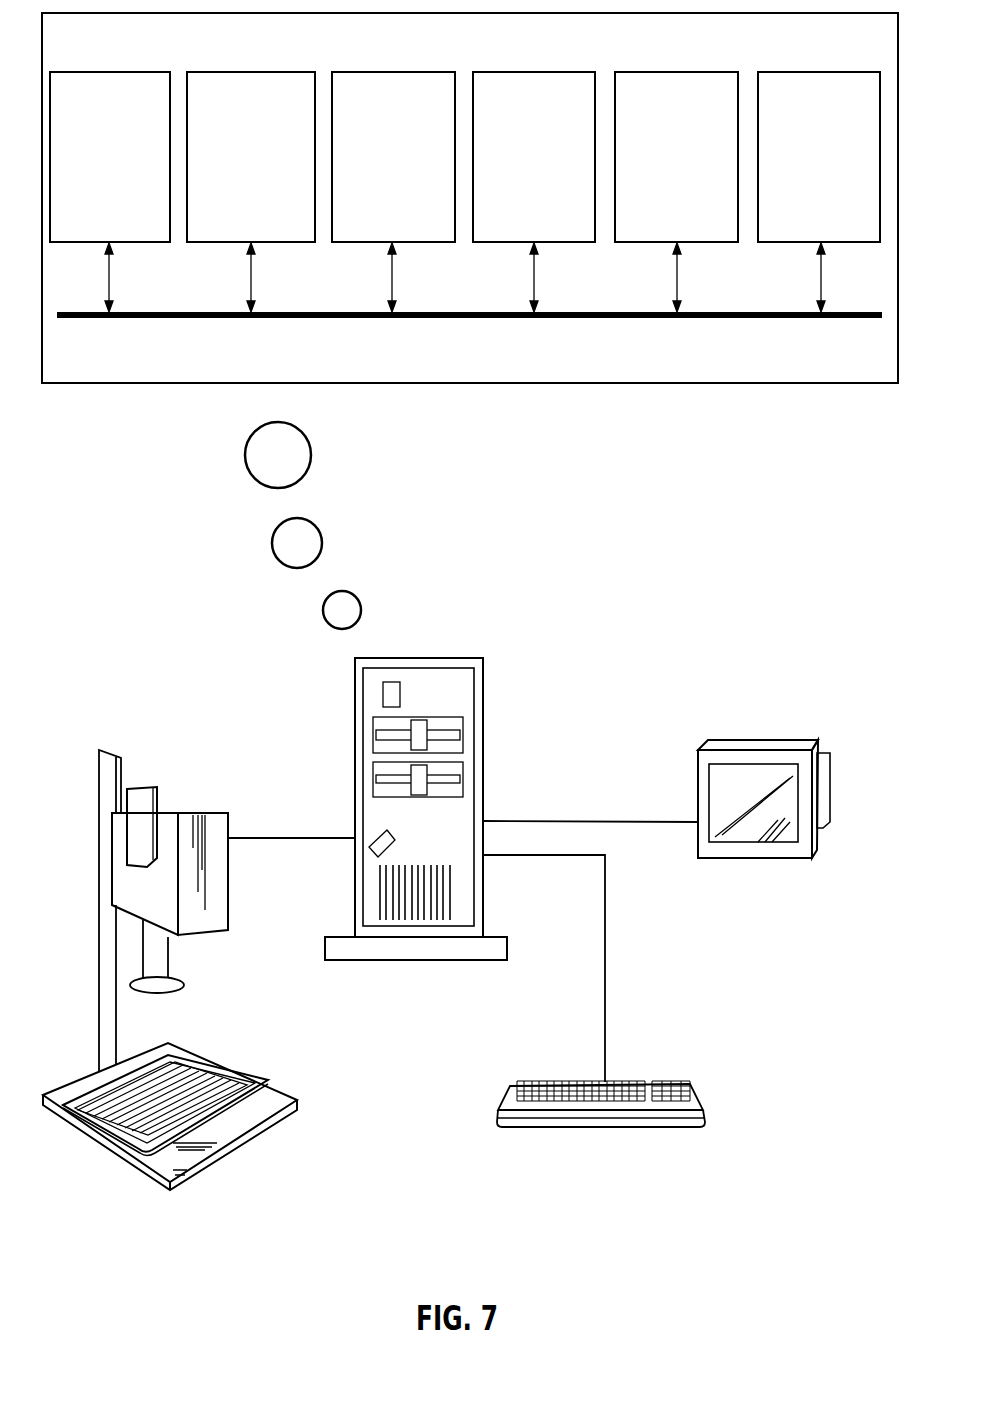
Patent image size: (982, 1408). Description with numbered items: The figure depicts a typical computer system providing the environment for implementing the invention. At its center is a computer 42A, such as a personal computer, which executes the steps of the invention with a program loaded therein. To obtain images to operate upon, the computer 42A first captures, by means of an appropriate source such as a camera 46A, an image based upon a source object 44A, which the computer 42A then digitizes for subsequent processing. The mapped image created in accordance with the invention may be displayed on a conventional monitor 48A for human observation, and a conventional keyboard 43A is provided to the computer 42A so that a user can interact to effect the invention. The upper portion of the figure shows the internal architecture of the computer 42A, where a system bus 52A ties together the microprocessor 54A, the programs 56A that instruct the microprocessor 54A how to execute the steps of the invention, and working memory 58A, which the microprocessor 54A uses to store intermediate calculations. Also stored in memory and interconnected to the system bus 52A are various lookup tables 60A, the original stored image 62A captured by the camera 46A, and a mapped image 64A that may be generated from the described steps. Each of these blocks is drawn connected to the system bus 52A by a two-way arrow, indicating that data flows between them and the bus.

The computer 42A is at (475, 658).
The keyboard 43A is at (652, 1082).
The source object 44A is at (203, 1058).
The camera 46A is at (190, 813).
The monitor 48A is at (817, 740).
The system bus 52A is at (737, 320).
The microprocessor 54A is at (94, 228).
The programs 56A is at (236, 228).
The working memory 58A is at (377, 228).
The lookup tables 60A is at (519, 228).
The original stored image 62A is at (662, 228).
The mapped image 64A is at (806, 228).